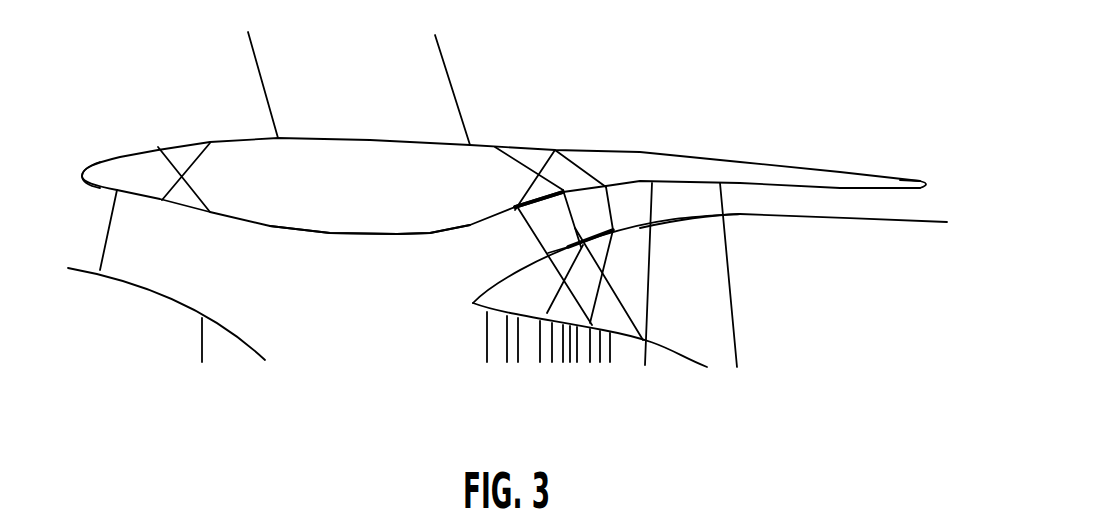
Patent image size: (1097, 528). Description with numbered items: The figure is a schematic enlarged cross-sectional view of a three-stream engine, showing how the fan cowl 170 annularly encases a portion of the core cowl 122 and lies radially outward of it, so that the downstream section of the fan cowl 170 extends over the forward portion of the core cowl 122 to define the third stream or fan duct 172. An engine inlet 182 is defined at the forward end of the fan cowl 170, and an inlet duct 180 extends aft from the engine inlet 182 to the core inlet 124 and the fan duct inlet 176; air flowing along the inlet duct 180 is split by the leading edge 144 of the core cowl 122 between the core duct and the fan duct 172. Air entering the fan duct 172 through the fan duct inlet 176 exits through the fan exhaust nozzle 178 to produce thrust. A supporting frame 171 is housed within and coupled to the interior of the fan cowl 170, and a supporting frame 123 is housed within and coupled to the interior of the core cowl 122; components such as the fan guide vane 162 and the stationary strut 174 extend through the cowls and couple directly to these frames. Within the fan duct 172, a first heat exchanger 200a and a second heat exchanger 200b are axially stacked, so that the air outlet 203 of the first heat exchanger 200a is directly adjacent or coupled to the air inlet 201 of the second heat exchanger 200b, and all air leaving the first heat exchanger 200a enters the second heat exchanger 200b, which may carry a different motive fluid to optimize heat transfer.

The core cowl 122 is at (851, 221).
The supporting frame 123 is at (610, 335).
The core inlet 124 is at (448, 345).
The leading edge 144 is at (473, 303).
The fan guide vane 162 is at (418, 87).
The fan cowl 170 is at (700, 155).
The supporting frame 171 is at (182, 176).
The fan duct 172 is at (600, 191).
The stationary strut 174 is at (730, 209).
The fan duct inlet 176 is at (448, 260).
The fan exhaust nozzle 178 is at (911, 206).
The inlet duct 180 is at (283, 270).
The engine inlet 182 is at (91, 214).
The first heat exchanger 200a is at (520, 202).
The second heat exchanger 200b is at (637, 201).
The air inlet 201 is at (592, 198).
The air outlet 203 is at (548, 277).